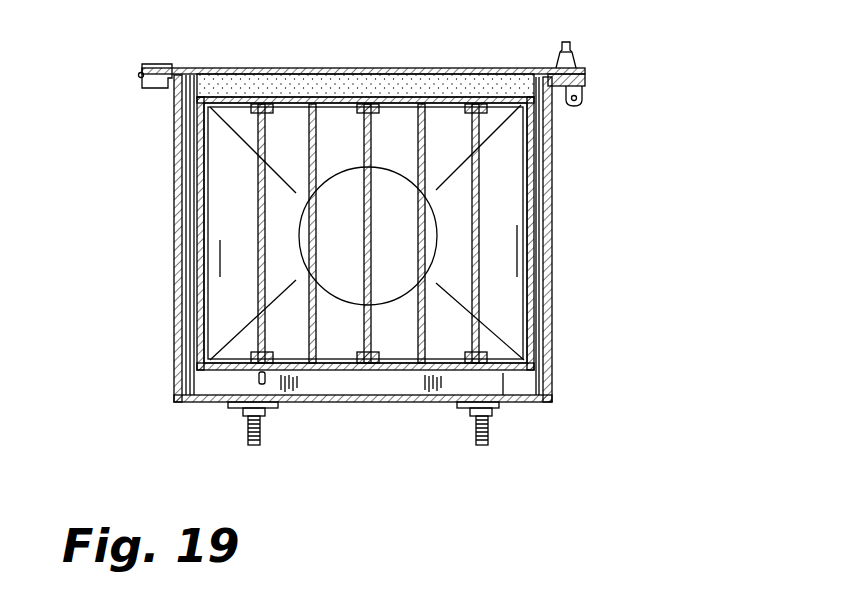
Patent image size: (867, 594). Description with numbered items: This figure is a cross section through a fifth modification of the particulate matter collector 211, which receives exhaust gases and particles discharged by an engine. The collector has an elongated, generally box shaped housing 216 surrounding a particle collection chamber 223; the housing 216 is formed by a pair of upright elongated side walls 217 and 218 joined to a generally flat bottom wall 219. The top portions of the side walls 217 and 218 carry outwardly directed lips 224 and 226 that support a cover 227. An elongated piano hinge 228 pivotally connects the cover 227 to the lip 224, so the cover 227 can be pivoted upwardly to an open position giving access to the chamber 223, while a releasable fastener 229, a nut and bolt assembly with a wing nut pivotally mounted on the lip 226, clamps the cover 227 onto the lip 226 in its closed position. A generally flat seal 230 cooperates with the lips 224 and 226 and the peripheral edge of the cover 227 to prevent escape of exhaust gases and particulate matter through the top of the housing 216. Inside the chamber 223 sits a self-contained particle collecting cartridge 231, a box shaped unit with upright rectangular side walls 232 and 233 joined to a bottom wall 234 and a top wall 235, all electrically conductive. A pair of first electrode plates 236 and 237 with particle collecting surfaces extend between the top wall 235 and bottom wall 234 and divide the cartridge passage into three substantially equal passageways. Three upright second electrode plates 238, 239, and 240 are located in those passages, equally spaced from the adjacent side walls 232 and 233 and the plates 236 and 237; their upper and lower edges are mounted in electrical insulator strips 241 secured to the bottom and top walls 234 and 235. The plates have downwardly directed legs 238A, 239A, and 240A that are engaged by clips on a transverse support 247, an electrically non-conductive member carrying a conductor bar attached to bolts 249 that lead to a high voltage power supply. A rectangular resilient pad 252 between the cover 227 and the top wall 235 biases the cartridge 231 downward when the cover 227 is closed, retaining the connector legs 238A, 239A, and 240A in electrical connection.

The particulate matter collector 211 is at (645, 93).
The housing 216 is at (172, 243).
The side wall 217 is at (184, 321).
The side wall 218 is at (553, 268).
The bottom wall 219 is at (540, 402).
The particle collection chamber 223 is at (538, 332).
The lip 224 is at (166, 86).
The lip 226 is at (585, 91).
The cover 227 is at (373, 68).
The piano hinge 228 is at (138, 72).
The releasable fastener 229 is at (578, 47).
The seal 230 is at (588, 80).
The particle collecting cartridge 231 is at (200, 349).
The side wall 232 is at (197, 197).
The side wall 233 is at (534, 201).
The bottom wall 234 is at (343, 372).
The top wall 235 is at (240, 99).
The first electrode plate 236 is at (300, 108).
The first electrode plate 237 is at (442, 102).
The second electrode plate 238 is at (258, 310).
The plate leg 238A is at (264, 378).
The second electrode plate 239 is at (372, 272).
The plate leg 239A is at (362, 376).
The second electrode plate 240 is at (474, 335).
The plate leg 240A is at (482, 376).
The electrical insulator strip 241 is at (258, 113).
The transverse support 247 is at (493, 386).
The bolt 249 is at (252, 444).
The resilient pad 252 is at (486, 86).